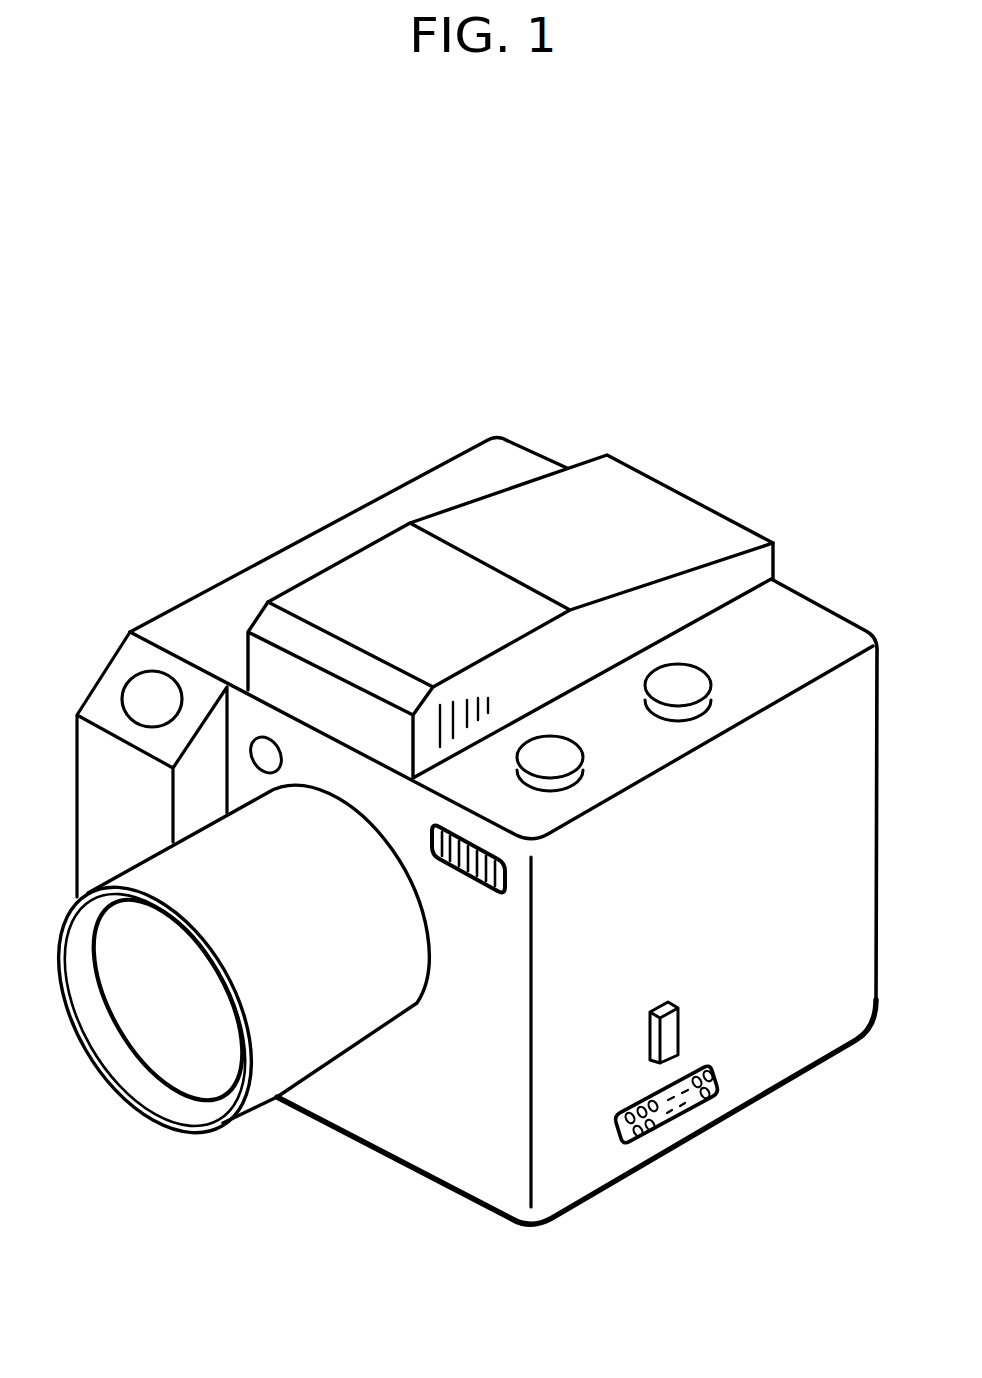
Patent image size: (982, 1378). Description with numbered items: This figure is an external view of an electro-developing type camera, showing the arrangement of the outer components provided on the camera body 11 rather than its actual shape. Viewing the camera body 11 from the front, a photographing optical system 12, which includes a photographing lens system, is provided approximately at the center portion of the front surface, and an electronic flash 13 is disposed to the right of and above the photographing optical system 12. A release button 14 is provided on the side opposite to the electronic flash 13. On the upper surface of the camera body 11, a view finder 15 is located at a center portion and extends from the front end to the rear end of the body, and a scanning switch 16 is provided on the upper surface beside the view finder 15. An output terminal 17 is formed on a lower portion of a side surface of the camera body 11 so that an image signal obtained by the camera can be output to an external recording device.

The camera body 11 is at (414, 1178).
The photographing optical system 12 is at (184, 1051).
The electronic flash 13 is at (471, 897).
The release button 14 is at (150, 698).
The view finder 15 is at (370, 587).
The scanning switch 16 is at (680, 687).
The output terminal 17 is at (670, 1123).